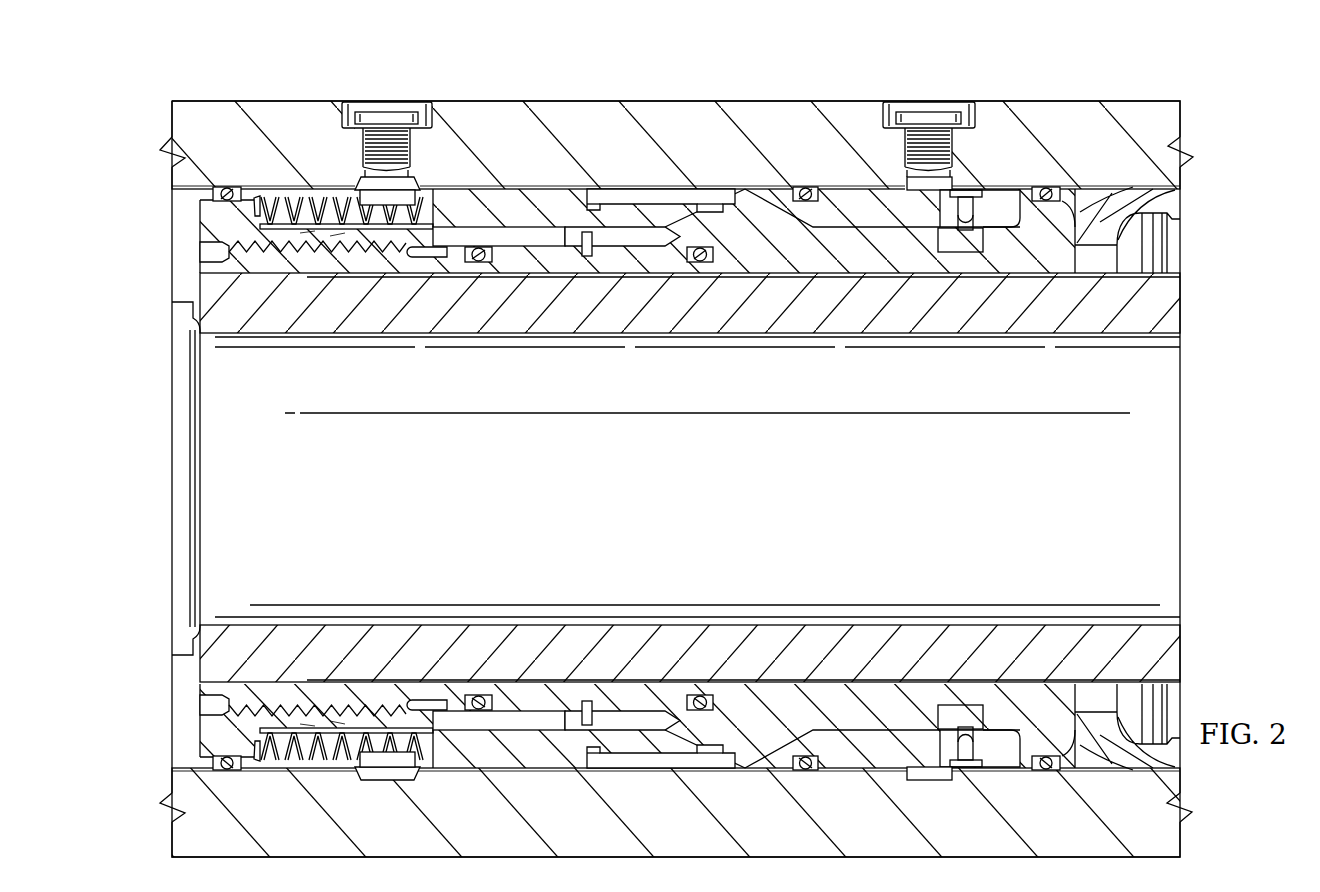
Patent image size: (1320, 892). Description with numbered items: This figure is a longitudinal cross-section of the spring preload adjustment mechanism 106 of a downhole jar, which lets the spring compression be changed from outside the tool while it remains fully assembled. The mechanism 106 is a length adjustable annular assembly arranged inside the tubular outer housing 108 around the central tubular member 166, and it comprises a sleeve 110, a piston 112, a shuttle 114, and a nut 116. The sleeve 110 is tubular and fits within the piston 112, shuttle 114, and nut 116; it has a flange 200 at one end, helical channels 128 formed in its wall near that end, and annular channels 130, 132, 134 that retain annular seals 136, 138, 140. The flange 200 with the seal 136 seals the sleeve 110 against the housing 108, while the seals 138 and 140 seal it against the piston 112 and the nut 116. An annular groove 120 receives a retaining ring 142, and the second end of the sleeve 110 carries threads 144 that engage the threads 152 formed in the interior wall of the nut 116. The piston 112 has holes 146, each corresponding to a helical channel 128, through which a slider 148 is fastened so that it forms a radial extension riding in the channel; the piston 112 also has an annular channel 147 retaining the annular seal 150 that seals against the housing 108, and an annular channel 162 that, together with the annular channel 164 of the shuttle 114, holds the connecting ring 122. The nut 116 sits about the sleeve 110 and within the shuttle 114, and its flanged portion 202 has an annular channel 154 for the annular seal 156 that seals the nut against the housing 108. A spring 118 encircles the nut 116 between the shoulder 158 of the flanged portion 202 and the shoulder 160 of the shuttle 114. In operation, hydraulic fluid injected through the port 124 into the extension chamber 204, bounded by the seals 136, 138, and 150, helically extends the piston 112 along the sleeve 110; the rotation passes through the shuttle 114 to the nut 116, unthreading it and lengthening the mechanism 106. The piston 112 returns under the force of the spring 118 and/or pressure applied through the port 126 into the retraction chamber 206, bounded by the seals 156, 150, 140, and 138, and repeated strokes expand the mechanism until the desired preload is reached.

The spring preload adjustment mechanism 106 is at (206, 89).
The tubular outer housing 108 is at (685, 108).
The sleeve 110 is at (882, 267).
The piston 112 is at (1007, 197).
The shuttle 114 is at (525, 205).
The nut 116 is at (203, 234).
The spring 118 is at (333, 195).
The annular groove 120 is at (600, 244).
The connecting ring 122 is at (635, 195).
The port 124 is at (962, 108).
The port 126 is at (423, 112).
The helical channels 128 is at (1023, 243).
The annular channel 130 is at (1068, 207).
The annular channel 132 is at (700, 262).
The annular channel 134 is at (470, 257).
The annular seal 136 is at (1045, 192).
The annular seal 138 is at (737, 258).
The annular seal 140 is at (462, 235).
The retaining ring 142 is at (583, 255).
The threads 144 is at (260, 250).
The holes 146 is at (936, 204).
The annular channel 147 is at (780, 188).
The slider 148 is at (965, 247).
The annular seal 150 is at (808, 192).
The threads 152 is at (335, 233).
The annular channel 154 is at (210, 190).
The annular seal 156 is at (233, 192).
The shoulder 158 is at (258, 200).
The shoulder 160 is at (410, 196).
The annular channel 162 is at (710, 206).
The annular channel 164 is at (590, 200).
The central tubular member 166 is at (843, 322).
The flange 200 is at (1172, 206).
The flanged portion 202 is at (215, 217).
The extension chamber 204 is at (927, 187).
The retraction chamber 206 is at (384, 186).